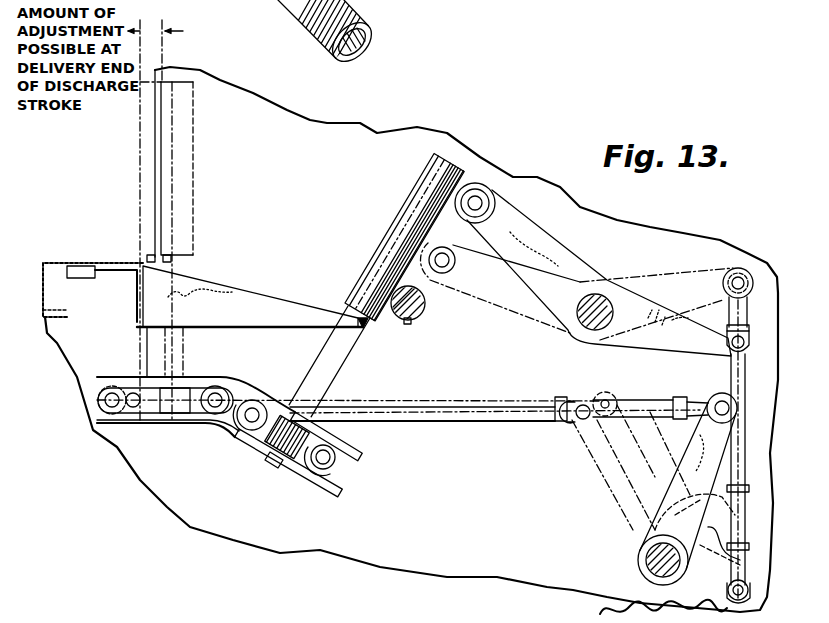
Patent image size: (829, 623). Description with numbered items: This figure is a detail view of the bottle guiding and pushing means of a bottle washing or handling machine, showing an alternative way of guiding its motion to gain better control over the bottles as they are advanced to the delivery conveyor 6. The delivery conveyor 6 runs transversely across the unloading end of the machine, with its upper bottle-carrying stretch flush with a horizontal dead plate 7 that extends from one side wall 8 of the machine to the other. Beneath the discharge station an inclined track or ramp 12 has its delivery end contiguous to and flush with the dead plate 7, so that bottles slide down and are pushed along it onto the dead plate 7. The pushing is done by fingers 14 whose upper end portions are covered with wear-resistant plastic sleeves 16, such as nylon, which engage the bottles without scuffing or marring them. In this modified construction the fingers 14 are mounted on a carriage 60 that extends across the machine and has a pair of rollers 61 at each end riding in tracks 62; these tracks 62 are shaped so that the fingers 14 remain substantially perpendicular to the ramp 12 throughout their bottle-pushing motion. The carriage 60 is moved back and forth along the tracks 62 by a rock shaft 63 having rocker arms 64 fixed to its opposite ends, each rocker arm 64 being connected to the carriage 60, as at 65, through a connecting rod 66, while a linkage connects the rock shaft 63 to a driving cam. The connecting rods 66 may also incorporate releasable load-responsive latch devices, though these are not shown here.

The delivery conveyor 6 is at (77, 261).
The dead plate 7 is at (117, 262).
The side wall 8 is at (320, 130).
The track or ramp 12 is at (240, 287).
The finger 14 is at (397, 223).
The sleeve 16 is at (427, 183).
The carriage 60 is at (265, 452).
The roller 61 is at (230, 430).
The track 62 is at (353, 448).
The rock shaft 63 is at (643, 560).
The rocker arm 64 is at (700, 447).
The carriage connection 65 is at (257, 406).
The connecting rod 66 is at (705, 373).